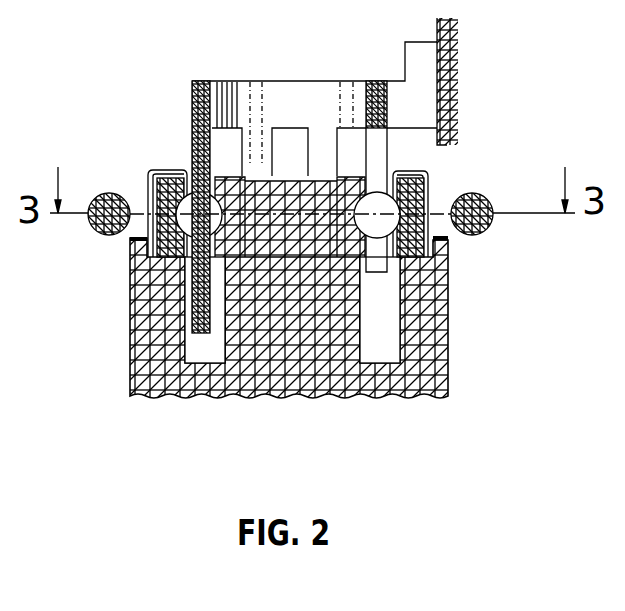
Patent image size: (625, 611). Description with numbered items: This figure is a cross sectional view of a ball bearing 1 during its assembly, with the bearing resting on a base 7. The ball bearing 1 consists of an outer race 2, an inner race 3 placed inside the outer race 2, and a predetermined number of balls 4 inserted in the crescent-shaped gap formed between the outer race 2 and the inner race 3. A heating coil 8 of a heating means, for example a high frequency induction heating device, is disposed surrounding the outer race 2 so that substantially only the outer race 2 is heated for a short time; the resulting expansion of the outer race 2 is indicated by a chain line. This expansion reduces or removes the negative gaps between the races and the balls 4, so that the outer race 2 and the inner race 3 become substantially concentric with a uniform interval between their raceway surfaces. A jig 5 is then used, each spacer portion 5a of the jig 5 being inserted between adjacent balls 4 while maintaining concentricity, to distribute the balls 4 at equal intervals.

The ball bearing 1 is at (440, 201).
The outer race 2 is at (440, 186).
The inner race 3 is at (355, 190).
The balls 4 is at (408, 262).
The jig 5 is at (232, 92).
The spacer portion 5a is at (210, 310).
The base 7 is at (424, 360).
The heating coil 8 is at (488, 233).